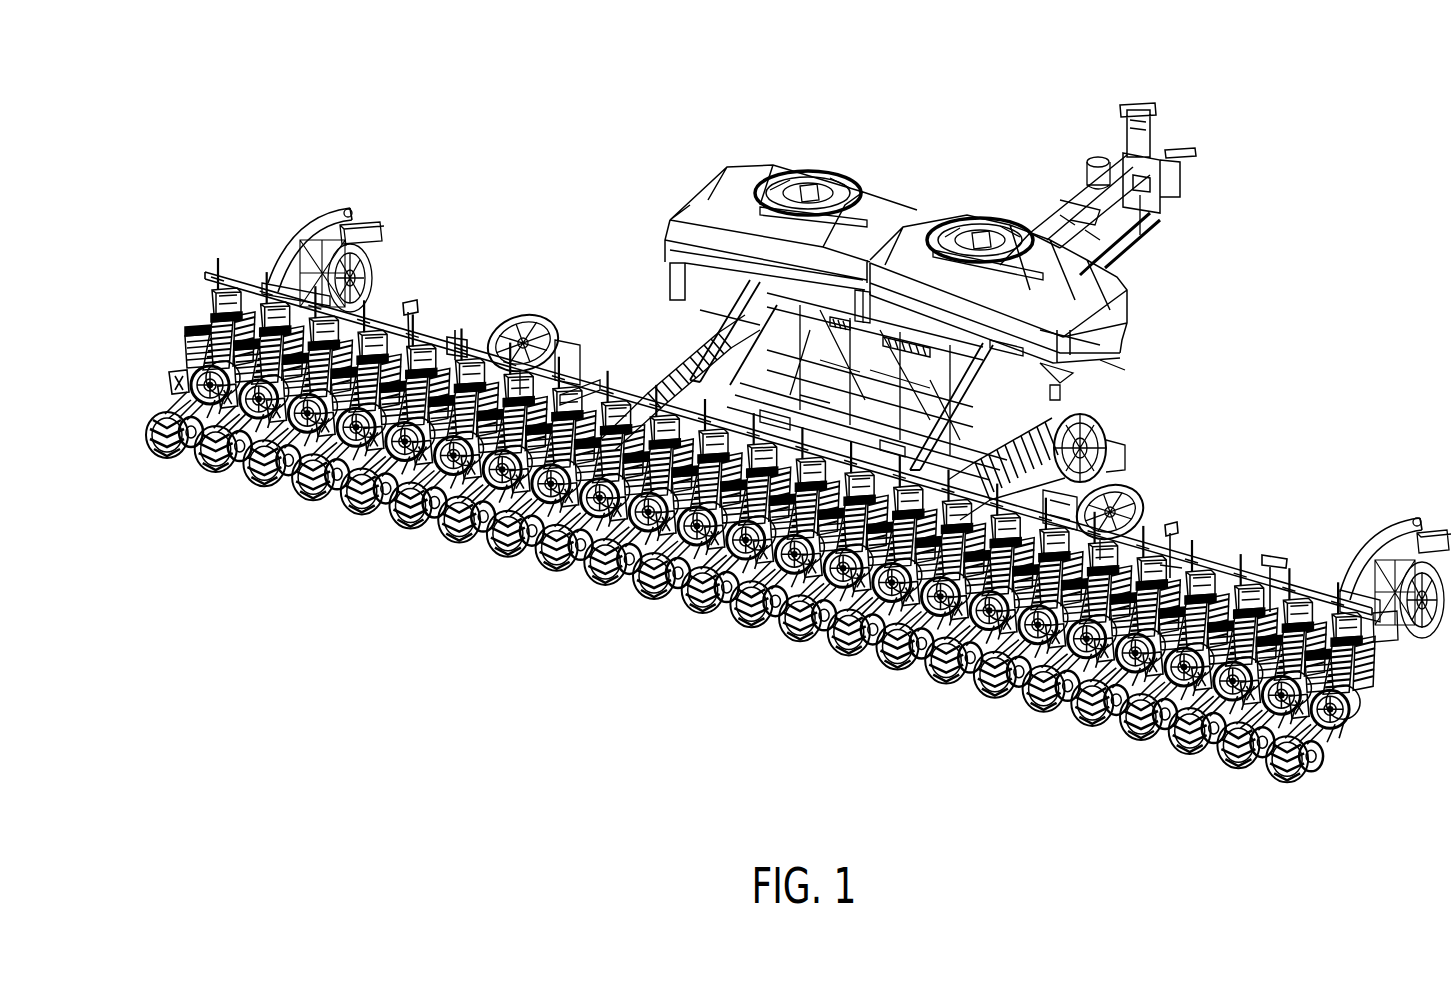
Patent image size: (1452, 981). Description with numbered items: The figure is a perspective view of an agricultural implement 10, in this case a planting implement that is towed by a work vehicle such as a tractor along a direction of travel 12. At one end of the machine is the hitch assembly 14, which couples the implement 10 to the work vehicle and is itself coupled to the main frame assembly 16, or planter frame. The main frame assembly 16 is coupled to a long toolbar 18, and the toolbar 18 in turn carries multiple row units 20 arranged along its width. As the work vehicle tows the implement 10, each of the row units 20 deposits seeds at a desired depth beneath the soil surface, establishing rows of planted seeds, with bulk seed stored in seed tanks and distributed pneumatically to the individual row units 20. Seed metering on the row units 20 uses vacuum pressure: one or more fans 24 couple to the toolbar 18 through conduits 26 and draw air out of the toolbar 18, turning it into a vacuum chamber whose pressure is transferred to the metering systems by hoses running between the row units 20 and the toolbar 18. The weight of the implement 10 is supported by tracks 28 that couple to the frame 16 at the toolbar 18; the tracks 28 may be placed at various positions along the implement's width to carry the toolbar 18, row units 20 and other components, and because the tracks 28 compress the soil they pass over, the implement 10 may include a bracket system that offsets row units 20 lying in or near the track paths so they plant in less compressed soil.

The agricultural implement 10 is at (860, 147).
The direction of travel 12 is at (990, 162).
The hitch assembly 14 is at (1197, 218).
The main frame assembly 16 is at (373, 127).
The toolbar 18 is at (1325, 598).
The row units 20 is at (187, 478).
The fans 24 is at (500, 297).
The conduits 26 is at (467, 327).
The tracks 28 is at (670, 360).